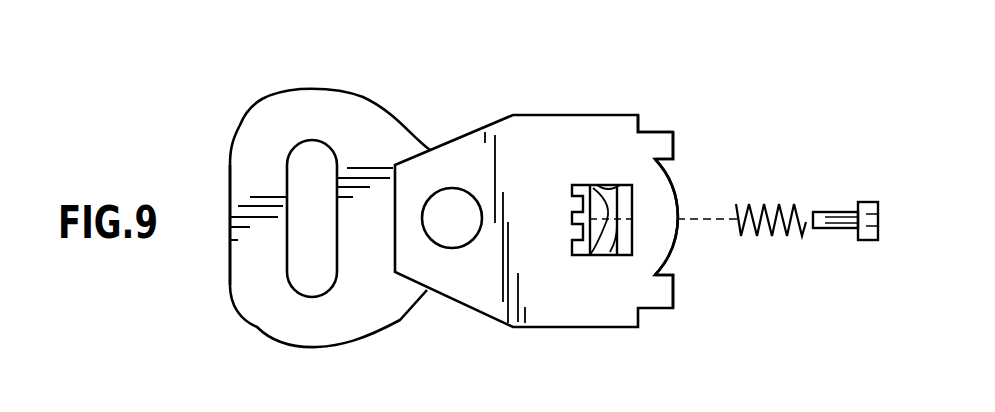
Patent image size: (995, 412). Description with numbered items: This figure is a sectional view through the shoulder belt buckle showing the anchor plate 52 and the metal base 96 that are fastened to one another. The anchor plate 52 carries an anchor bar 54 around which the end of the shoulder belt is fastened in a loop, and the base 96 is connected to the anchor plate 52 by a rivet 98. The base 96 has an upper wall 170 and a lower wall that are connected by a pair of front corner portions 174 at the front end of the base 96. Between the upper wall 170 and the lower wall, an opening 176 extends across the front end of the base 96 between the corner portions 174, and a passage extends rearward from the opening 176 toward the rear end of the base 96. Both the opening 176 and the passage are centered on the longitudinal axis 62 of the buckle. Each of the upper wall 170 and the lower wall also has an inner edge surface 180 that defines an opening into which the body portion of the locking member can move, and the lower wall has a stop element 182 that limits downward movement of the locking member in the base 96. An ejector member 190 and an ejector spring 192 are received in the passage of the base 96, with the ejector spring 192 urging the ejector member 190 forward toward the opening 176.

The anchor plate 52 is at (363, 100).
The anchor bar 54 is at (230, 237).
The base 96 is at (526, 113).
The rivet 98 is at (457, 217).
The upper wall 170 is at (605, 133).
The front corner portions 174 is at (674, 143).
The opening 176 is at (676, 178).
The inner edge surface 180 is at (599, 184).
The stop element 182 is at (612, 242).
The longitudinal axis 62 is at (712, 219).
The ejector member 190 is at (841, 229).
The ejector spring 192 is at (742, 237).